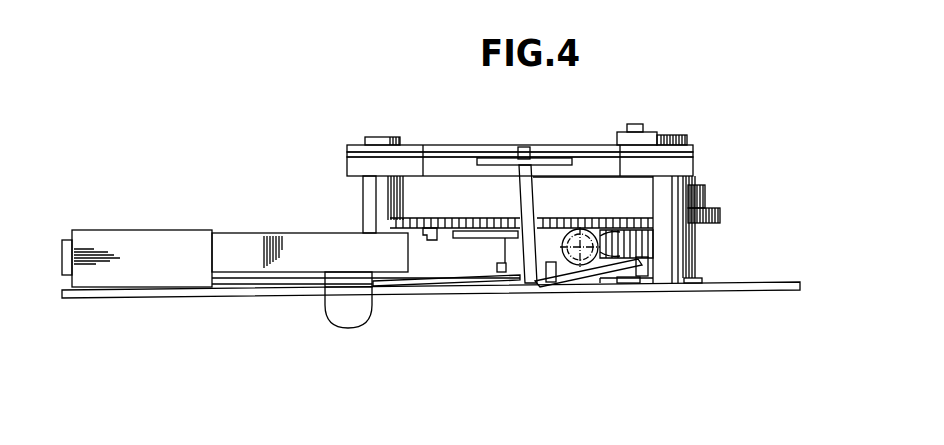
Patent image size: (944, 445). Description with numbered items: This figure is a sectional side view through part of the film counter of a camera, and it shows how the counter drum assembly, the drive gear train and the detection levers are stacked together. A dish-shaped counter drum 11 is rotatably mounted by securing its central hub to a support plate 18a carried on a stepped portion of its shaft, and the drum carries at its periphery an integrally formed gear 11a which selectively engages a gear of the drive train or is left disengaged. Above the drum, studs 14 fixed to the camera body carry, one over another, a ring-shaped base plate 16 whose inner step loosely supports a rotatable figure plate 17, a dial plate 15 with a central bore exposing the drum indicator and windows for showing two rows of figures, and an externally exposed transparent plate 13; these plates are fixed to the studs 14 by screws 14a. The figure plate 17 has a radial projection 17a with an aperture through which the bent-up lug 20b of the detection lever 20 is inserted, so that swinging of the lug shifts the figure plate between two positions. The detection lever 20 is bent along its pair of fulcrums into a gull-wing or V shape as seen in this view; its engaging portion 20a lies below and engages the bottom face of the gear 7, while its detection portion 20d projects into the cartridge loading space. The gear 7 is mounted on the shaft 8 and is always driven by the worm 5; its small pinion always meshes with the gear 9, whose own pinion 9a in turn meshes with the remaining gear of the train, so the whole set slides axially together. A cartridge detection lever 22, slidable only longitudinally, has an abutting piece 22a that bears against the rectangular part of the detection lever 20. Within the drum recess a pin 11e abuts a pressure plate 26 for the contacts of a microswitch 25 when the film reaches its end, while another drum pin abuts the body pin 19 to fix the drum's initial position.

The worm 5 is at (592, 263).
The gear 7 is at (649, 240).
The shaft 8 is at (635, 123).
The gear 9 is at (720, 210).
The pinion 9a is at (705, 190).
The counter drum 11 is at (450, 201).
The gear 11a is at (500, 197).
The pin 11e is at (423, 237).
The transparent plate 13 is at (357, 148).
The stud 14 is at (372, 202).
The screw 14a is at (388, 137).
The dial plate 15 is at (469, 150).
The base plate 16 is at (347, 167).
The figure plate 17 is at (547, 157).
The projection 17a is at (518, 150).
The support plate 18a is at (483, 238).
The pin 19 is at (512, 267).
The detection lever 20 is at (443, 283).
The engaging portion 20a is at (628, 280).
The bent-up lug 20b is at (533, 173).
The detection portion 20d is at (333, 318).
The cartridge detection lever 22 is at (238, 283).
The abutting piece 22a is at (548, 263).
The microswitch 25 is at (125, 230).
The pressure plate 26 is at (242, 238).